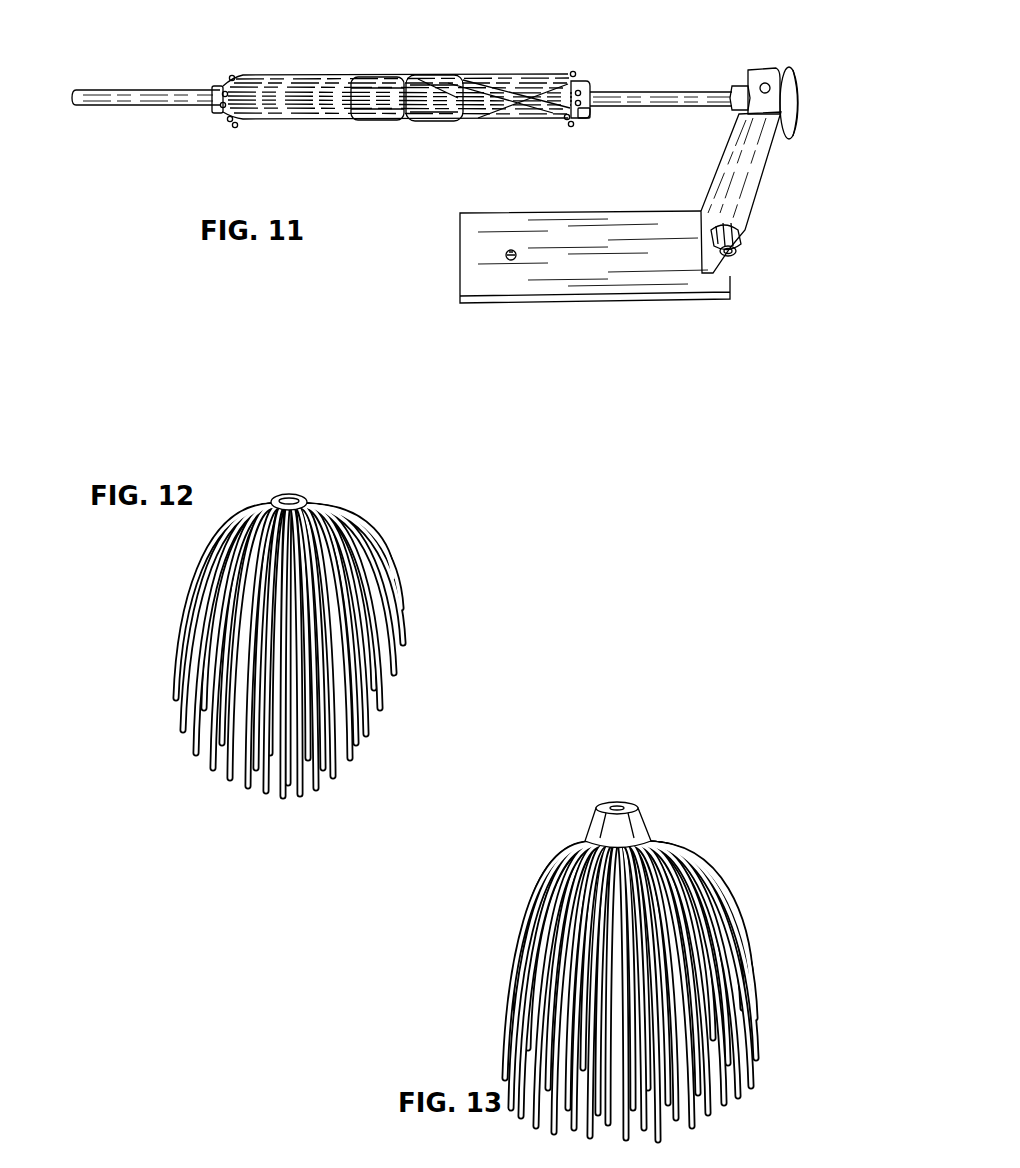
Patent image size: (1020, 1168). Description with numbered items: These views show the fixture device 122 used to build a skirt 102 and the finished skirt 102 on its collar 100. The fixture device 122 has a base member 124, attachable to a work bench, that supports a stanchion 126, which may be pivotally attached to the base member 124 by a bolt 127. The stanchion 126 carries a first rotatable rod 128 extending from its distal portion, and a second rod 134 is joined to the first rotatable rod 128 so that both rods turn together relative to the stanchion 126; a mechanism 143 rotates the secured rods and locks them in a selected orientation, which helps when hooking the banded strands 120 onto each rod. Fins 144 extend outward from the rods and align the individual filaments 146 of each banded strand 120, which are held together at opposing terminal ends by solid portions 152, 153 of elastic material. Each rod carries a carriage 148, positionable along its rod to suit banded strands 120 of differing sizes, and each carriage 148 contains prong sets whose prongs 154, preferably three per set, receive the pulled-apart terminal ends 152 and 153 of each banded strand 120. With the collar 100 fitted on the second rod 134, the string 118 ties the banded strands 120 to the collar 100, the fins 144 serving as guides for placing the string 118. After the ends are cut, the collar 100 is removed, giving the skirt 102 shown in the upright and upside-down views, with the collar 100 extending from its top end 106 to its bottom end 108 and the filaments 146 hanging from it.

In FIG. 12, the collar 100 is at (262, 489).
In FIG. 13, the collar 100 is at (572, 815).
In FIG. 12, the multi-banded skirt 102 is at (321, 663).
In FIG. 13, the multi-banded skirt 102 is at (657, 1002).
In FIG. 12, the top end 106 is at (284, 487).
In FIG. 13, the bottom end 108 is at (641, 815).
In FIG. 11, the string 118 is at (396, 69).
In FIG. 11, the banded strands 120 is at (300, 112).
In FIG. 11, the fixture device 122 is at (767, 175).
In FIG. 11, the base member 124 is at (520, 296).
In FIG. 11, the stanchion 126 is at (745, 208).
In FIG. 11, the bolt 127 is at (732, 252).
In FIG. 11, the first rotatable rod 128 is at (640, 86).
In FIG. 11, the second rod 134 is at (148, 82).
In FIG. 11, the mechanism 143 is at (787, 70).
In FIG. 11, the fins 144 is at (437, 67).
In FIG. 11, the filaments 146 is at (305, 69).
In FIG. 12, the filaments 146 is at (330, 760).
In FIG. 13, the filaments 146 is at (705, 1092).
In FIG. 11, the carriages 148 is at (212, 77).
In FIG. 11, the solid portion 152 is at (573, 74).
In FIG. 11, the solid portion 153 is at (209, 103).
In FIG. 11, the prongs 154 is at (221, 112).